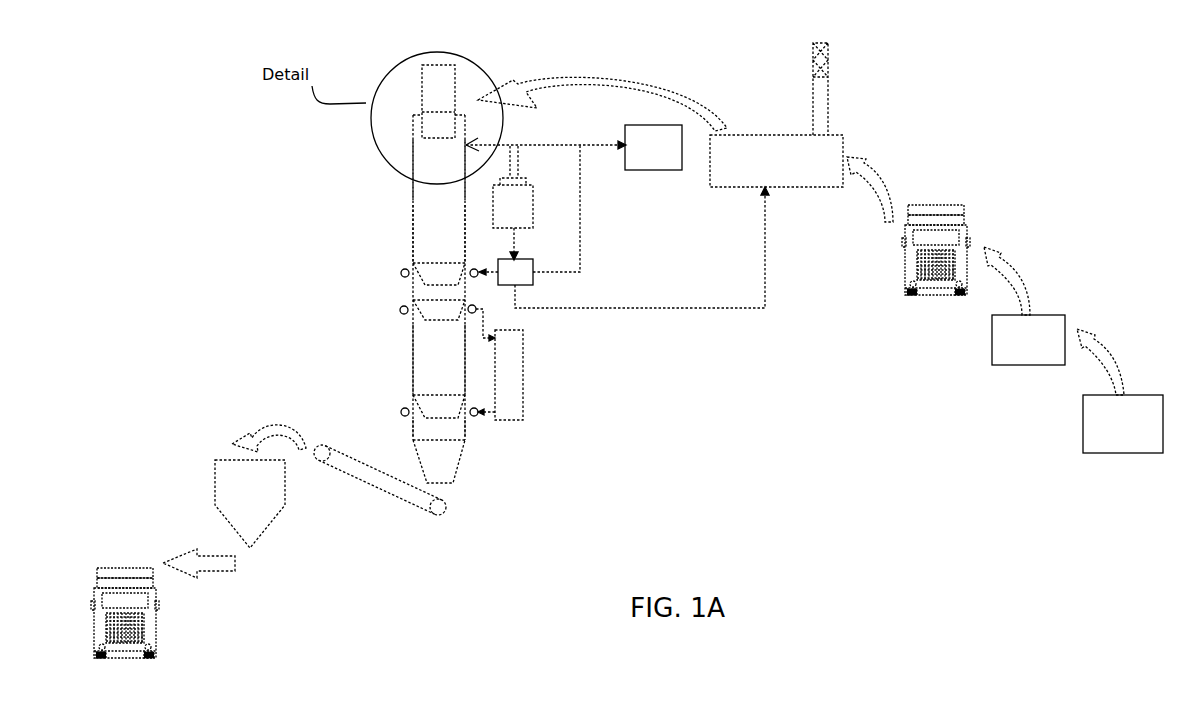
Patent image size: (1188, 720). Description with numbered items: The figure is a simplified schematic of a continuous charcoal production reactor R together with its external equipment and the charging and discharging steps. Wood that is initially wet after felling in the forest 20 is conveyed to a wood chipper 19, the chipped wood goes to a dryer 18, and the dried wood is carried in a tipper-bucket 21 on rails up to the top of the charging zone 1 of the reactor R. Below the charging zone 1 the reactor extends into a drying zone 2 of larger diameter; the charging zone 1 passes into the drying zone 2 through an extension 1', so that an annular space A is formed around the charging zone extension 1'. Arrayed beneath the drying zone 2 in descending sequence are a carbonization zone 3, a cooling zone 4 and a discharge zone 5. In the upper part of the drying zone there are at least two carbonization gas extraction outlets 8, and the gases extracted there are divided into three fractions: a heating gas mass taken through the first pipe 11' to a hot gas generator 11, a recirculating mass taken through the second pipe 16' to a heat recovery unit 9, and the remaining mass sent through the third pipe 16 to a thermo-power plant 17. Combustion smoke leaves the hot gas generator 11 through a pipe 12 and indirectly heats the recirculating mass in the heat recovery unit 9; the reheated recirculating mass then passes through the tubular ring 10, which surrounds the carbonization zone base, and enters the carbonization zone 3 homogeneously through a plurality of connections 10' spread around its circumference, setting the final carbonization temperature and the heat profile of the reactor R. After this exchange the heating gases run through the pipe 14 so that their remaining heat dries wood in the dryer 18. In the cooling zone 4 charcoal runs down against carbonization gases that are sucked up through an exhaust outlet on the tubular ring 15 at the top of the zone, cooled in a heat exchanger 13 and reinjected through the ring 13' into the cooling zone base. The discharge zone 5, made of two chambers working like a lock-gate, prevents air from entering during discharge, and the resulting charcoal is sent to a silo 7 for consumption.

The carbonization reactor R is at (363, 277).
The charging zone 1 is at (438, 101).
The charging zone extension 1' is at (438, 123).
The annular space A is at (412, 131).
The drying zone 2 is at (439, 170).
The carbonization zone 3 is at (439, 233).
The cooling zone 4 is at (439, 359).
The discharge zone 5 is at (439, 434).
The silo 7 is at (234, 501).
The carbonization gas extraction outlets 8 is at (477, 134).
The heat recovery unit 9 is at (506, 272).
The tubular ring 10 is at (442, 262).
The connections 10' is at (455, 314).
The hot gas generator 11 is at (513, 203).
The first pipe 11' is at (541, 172).
The pipe 12 is at (524, 244).
The heat exchanger 13 is at (499, 364).
The ring 13' is at (429, 400).
The pipe 14 is at (642, 247).
The tubular ring 15 is at (432, 315).
The third pipe 16 is at (546, 135).
The second pipe 16' is at (598, 208).
The thermo-power plant 17 is at (653, 147).
The dryer 18 is at (801, 132).
The wood chipper 19 is at (1024, 306).
The forest 20 is at (1120, 391).
The tipper-bucket 21 is at (602, 92).